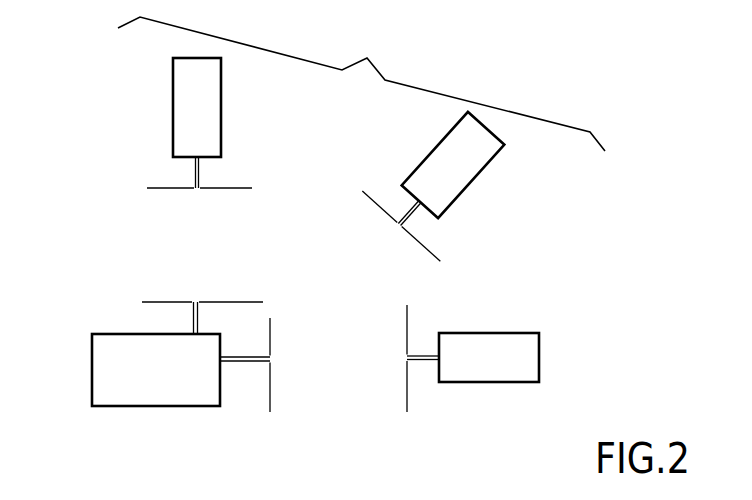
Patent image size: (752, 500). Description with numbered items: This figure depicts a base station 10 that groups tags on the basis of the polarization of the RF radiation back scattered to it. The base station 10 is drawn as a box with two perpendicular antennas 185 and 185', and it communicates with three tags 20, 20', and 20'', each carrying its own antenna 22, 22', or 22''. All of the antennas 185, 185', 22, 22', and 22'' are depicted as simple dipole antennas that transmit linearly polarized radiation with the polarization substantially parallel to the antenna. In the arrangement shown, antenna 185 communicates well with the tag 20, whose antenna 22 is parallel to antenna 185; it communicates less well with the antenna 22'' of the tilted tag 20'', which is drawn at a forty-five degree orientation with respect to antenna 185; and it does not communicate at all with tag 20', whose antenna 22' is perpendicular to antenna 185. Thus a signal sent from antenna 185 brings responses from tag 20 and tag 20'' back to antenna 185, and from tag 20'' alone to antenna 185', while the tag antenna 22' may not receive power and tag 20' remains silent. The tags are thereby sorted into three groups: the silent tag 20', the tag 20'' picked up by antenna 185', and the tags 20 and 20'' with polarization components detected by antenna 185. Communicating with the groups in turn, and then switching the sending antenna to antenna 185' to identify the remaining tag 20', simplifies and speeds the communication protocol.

The base station 10 is at (92, 370).
The tag 20 is at (522, 356).
The tag 20' is at (166, 107).
The tag 20'' is at (429, 165).
The tag antenna 22 is at (440, 348).
The tag antenna 22' is at (174, 172).
The tag antenna 22'' is at (384, 214).
The base station antenna 185 is at (282, 365).
The base station antenna 185' is at (202, 301).